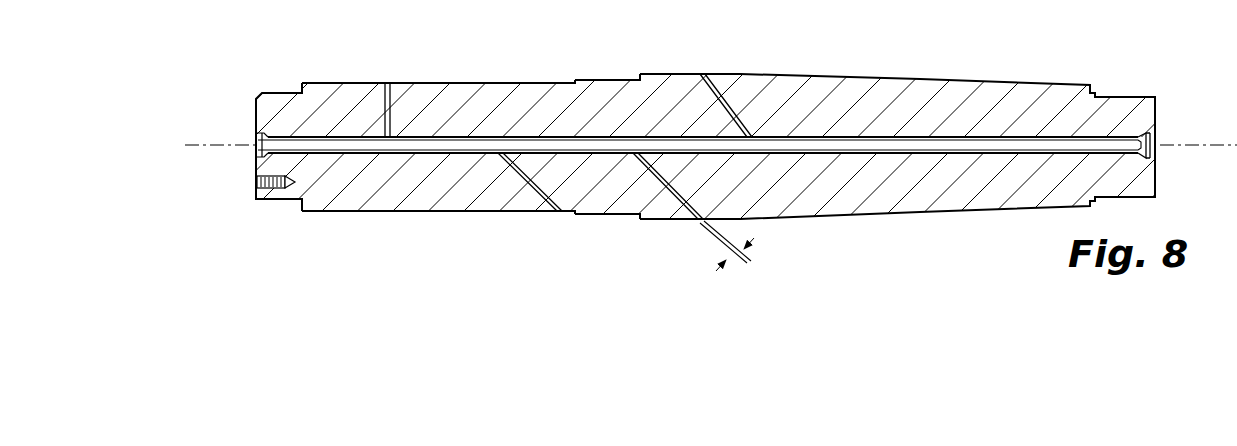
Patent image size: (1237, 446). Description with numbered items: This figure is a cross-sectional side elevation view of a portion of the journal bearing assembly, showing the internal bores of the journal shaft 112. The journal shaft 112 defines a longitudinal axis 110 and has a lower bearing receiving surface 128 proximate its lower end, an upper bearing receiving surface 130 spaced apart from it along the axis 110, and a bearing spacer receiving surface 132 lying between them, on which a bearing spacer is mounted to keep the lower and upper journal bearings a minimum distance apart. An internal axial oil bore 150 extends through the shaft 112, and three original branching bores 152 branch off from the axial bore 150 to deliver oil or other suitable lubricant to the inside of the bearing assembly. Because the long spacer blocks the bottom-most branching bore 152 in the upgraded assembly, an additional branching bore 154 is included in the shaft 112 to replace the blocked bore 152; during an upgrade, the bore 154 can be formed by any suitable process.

The longitudinal axis 110 is at (197, 144).
The journal shaft 112 is at (682, 148).
The lower bearing receiving surface 128 is at (270, 93).
The upper bearing receiving surface 130 is at (607, 79).
The bearing spacer receiving surface 132 is at (467, 82).
The internal axial oil bore 150 is at (327, 144).
The branching bores 152 is at (384, 108).
The additional branching bore 154 is at (665, 193).